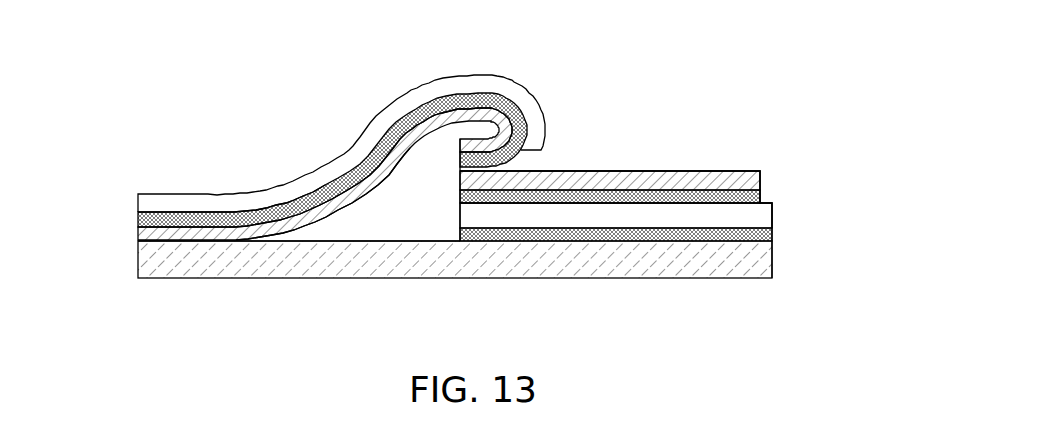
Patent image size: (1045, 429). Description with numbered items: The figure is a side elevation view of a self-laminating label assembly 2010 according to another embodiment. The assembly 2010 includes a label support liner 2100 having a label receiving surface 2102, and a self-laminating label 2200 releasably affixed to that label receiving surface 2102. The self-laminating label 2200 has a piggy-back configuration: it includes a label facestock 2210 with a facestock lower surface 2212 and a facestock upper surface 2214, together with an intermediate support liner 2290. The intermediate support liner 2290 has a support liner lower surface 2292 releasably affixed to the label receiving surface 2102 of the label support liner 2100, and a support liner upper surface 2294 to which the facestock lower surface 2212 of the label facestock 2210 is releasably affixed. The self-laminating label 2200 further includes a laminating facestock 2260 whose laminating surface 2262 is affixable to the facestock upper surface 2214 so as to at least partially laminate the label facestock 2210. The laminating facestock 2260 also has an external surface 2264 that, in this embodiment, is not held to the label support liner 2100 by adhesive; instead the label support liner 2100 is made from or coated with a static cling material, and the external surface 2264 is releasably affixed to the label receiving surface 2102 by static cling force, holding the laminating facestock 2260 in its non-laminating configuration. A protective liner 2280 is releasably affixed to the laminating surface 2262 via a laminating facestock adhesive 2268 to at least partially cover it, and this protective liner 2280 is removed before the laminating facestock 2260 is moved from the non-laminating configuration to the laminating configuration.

The self-laminating label assembly 2010 is at (715, 74).
The label support liner 2100 is at (564, 262).
The label receiving surface 2102 is at (157, 234).
The self-laminating label 2200 is at (581, 82).
The label facestock 2210 is at (743, 171).
The facestock lower surface 2212 is at (742, 193).
The facestock upper surface 2214 is at (643, 171).
The laminating facestock 2260 is at (221, 233).
The laminating surface 2262 is at (180, 224).
The external surface 2264 is at (315, 225).
The laminating facestock adhesive 2268 is at (251, 218).
The protective liner 2280 is at (396, 120).
The intermediate support liner 2290 is at (692, 213).
The support liner lower surface 2292 is at (733, 229).
The support liner upper surface 2294 is at (713, 203).